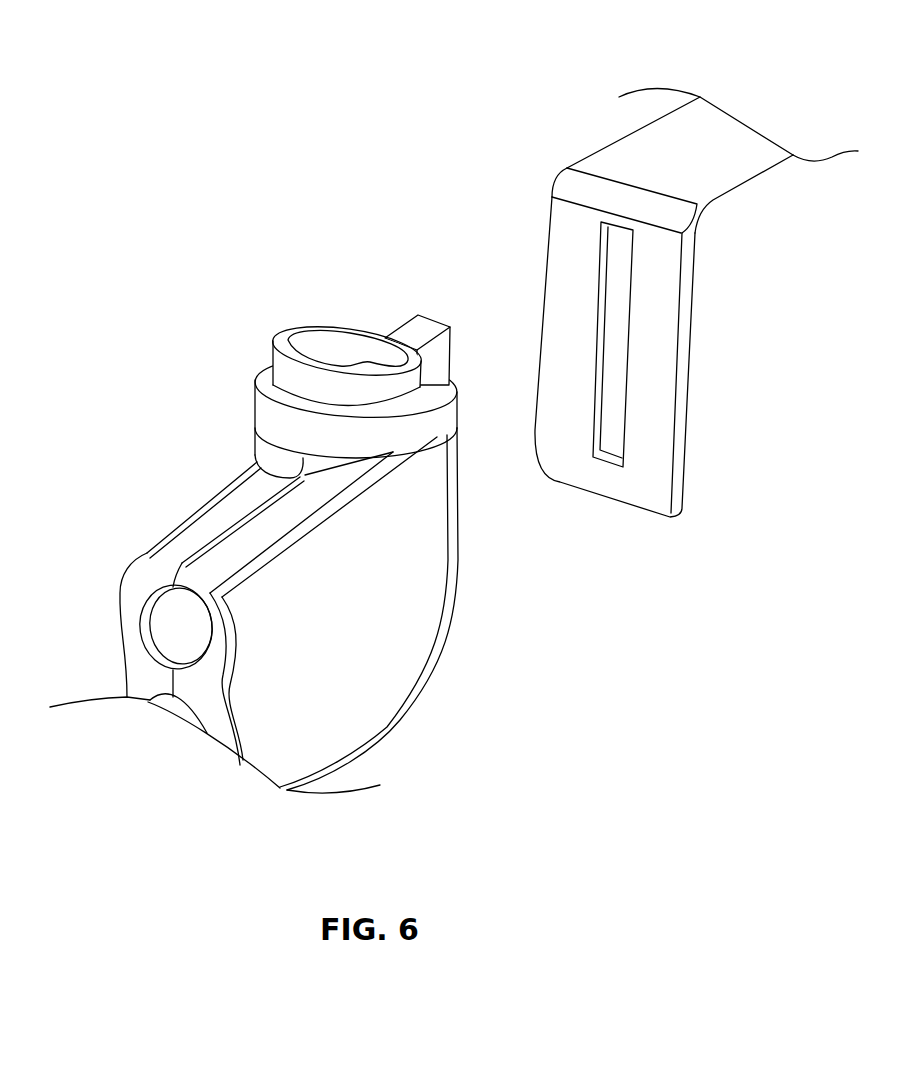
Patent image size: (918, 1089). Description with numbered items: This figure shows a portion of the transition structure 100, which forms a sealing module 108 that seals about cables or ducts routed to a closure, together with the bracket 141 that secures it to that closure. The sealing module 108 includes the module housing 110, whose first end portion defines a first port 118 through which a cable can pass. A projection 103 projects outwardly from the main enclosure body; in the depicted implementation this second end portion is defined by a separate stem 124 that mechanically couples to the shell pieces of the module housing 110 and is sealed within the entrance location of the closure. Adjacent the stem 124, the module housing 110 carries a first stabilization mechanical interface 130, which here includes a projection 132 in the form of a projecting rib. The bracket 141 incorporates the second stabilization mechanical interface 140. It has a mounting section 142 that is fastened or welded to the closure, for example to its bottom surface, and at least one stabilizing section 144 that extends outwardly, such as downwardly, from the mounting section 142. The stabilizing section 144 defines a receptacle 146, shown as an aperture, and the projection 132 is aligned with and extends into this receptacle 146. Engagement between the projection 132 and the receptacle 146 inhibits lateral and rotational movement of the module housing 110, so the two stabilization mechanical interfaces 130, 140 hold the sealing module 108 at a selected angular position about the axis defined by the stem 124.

The transition structure 100 is at (276, 554).
The sealing module 108 is at (276, 554).
The projection 103 is at (274, 325).
The stem 124 is at (274, 325).
The module housing 110 is at (413, 622).
The first port 118 is at (155, 623).
The first stabilization mechanical interface 130 is at (405, 328).
The projection 132 is at (428, 320).
The second stabilization mechanical interface 140 is at (690, 300).
The bracket 141 is at (716, 220).
The mounting section 142 is at (727, 140).
The stabilizing section 144 is at (663, 390).
The receptacle 146 is at (628, 322).